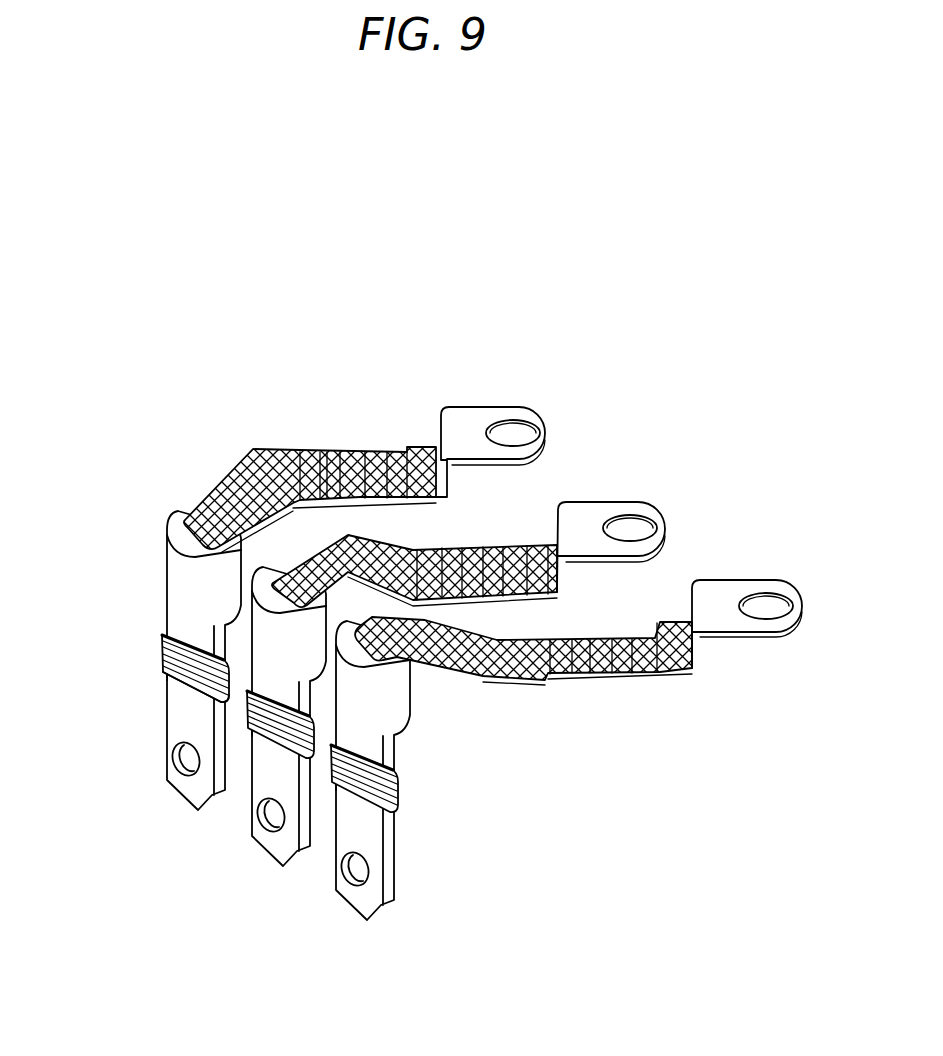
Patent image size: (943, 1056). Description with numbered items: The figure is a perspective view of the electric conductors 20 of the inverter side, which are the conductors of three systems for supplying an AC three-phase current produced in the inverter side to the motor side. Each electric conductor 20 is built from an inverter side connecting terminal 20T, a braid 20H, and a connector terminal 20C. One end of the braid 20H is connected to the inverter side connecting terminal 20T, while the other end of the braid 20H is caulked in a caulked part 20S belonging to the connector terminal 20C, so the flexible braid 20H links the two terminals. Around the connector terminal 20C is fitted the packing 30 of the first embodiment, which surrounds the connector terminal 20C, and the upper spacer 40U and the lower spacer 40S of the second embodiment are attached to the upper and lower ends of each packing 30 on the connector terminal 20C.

The electric conductor 20 is at (576, 374).
The braid 20H is at (304, 452).
The inverter side connecting terminal 20T is at (466, 418).
The caulked part 20S is at (167, 557).
The upper spacer 40U is at (162, 631).
The packing 30 is at (161, 640).
The lower spacer 40S is at (161, 670).
The connector terminal 20C is at (178, 730).